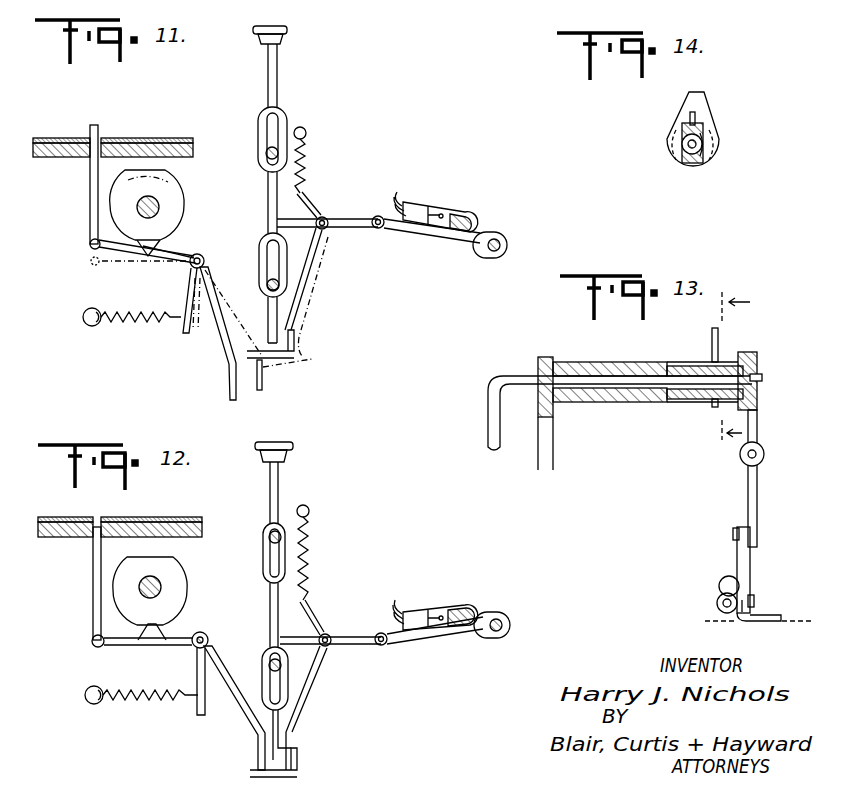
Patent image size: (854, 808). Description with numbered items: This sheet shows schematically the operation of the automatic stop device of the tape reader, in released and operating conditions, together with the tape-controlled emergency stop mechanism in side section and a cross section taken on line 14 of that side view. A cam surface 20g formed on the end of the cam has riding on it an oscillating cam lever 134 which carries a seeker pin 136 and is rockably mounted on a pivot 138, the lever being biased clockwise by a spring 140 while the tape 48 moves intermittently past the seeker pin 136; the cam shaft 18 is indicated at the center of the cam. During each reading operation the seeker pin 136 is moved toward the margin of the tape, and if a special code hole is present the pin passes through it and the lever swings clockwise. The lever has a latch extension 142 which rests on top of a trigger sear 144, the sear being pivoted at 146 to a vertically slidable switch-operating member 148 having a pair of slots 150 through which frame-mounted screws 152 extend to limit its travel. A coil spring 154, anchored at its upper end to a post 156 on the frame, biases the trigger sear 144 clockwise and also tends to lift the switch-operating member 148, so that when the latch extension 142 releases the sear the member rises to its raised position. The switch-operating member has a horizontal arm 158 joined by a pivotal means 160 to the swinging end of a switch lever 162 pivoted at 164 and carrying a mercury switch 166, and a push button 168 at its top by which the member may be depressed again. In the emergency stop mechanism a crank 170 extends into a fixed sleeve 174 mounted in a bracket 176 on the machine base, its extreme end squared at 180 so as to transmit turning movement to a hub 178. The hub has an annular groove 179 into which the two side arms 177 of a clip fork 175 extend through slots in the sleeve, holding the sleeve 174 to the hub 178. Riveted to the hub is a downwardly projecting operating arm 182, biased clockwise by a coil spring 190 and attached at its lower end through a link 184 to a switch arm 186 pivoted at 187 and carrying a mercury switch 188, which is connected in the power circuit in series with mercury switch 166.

In FIG. 13, the section line 14— 14 is at (745, 379).
In FIG. 11, the cam shaft 18 is at (141, 204).
In FIG. 12, the cam shaft 18 is at (143, 585).
In FIG. 11, the cam surface 20g is at (185, 200).
In FIG. 12, the cam surface 20g is at (187, 588).
In FIG. 11, the tape 48 is at (58, 140).
In FIG. 12, the tape 48 is at (60, 520).
In FIG. 11, the cam lever 134 is at (112, 260).
In FIG. 12, the cam lever 134 is at (126, 650).
In FIG. 11, the seeker pin 136 is at (90, 185).
In FIG. 12, the seeker pin 136 is at (93, 578).
In FIG. 11, the pivot 138 is at (197, 254).
In FIG. 12, the pivot 138 is at (200, 632).
In FIG. 11, the spring 140 is at (140, 330).
In FIG. 12, the spring 140 is at (142, 704).
In FIG. 11, the latch extension 142 is at (230, 350).
In FIG. 12, the latch extension 142 is at (258, 742).
In FIG. 11, the trigger sear 144 is at (287, 342).
In FIG. 12, the trigger sear 144 is at (250, 773).
In FIG. 11, the pivot 146 is at (324, 230).
In FIG. 12, the pivot 146 is at (326, 648).
In FIG. 11, the switch-operating member 148 is at (268, 190).
In FIG. 12, the switch-operating member 148 is at (270, 598).
In FIG. 11, the slots 150 is at (263, 125).
In FIG. 12, the slots 150 is at (266, 562).
In FIG. 11, the screws 152 is at (266, 153).
In FIG. 12, the screws 152 is at (268, 534).
In FIG. 11, the coil spring 154 is at (306, 182).
In FIG. 12, the coil spring 154 is at (309, 584).
In FIG. 11, the post 156 is at (306, 128).
In FIG. 12, the post 156 is at (307, 510).
In FIG. 11, the horizontal arm 158 is at (343, 218).
In FIG. 12, the horizontal arm 158 is at (347, 636).
In FIG. 11, the pivotal means 160 is at (377, 230).
In FIG. 12, the pivotal means 160 is at (386, 646).
In FIG. 11, the switch lever 162 is at (446, 242).
In FIG. 12, the switch lever 162 is at (456, 640).
In FIG. 11, the pivot 164 is at (500, 240).
In FIG. 12, the pivot 164 is at (507, 632).
In FIG. 11, the mercury switch 166 is at (474, 202).
In FIG. 12, the mercury switch 166 is at (454, 608).
In FIG. 11, the push button 168 is at (284, 40).
In FIG. 12, the push button 168 is at (284, 456).
In FIG. 14, the crank 170 is at (688, 147).
In FIG. 13, the crank 170 is at (506, 376).
In FIG. 14, the fixed sleeve 174 is at (701, 128).
In FIG. 13, the fixed sleeve 174 is at (606, 354).
In FIG. 14, the clip fork 175 is at (690, 100).
In FIG. 13, the clip fork 175 is at (712, 334).
In FIG. 13, the bracket 176 is at (548, 442).
In FIG. 14, the side arms 177 is at (675, 160).
In FIG. 13, the side arms 177 is at (712, 406).
In FIG. 14, the hub 178 is at (684, 139).
In FIG. 13, the hub 178 is at (690, 365).
In FIG. 14, the annular groove 179 is at (703, 144).
In FIG. 13, the annular groove 179 is at (729, 362).
In FIG. 13, the squared end 180 is at (762, 376).
In FIG. 13, the operating arm 182 is at (757, 485).
In FIG. 13, the link 184 is at (750, 557).
In FIG. 13, the switch arm 186 is at (727, 576).
In FIG. 13, the pivot 187 is at (775, 613).
In FIG. 13, the mercury switch 188 is at (717, 605).
In FIG. 13, the coil spring 190 is at (763, 445).